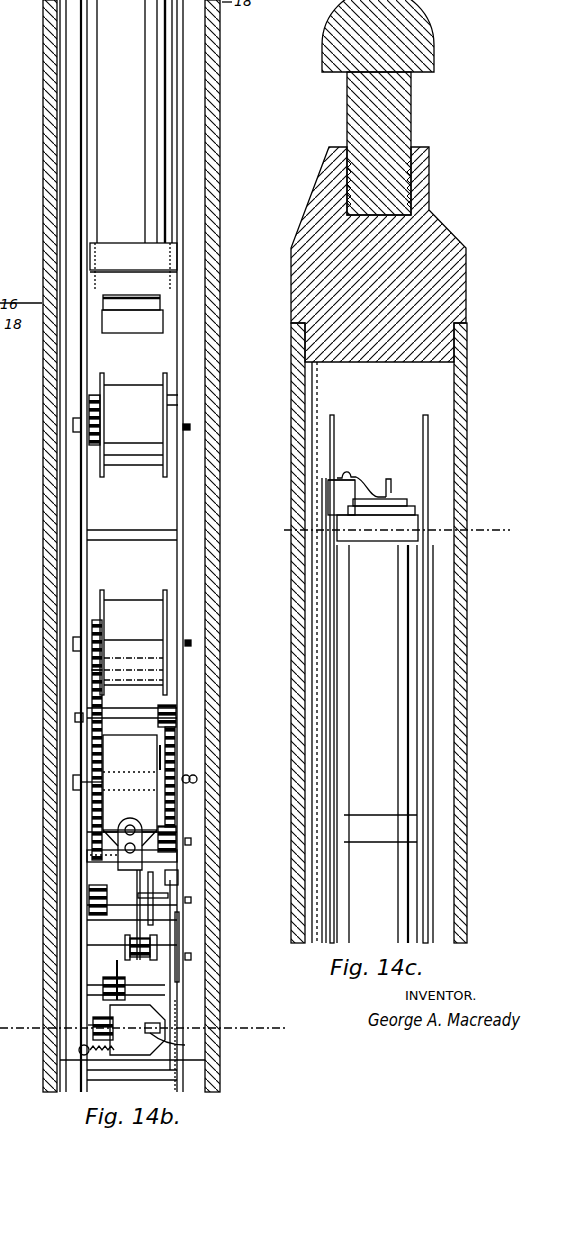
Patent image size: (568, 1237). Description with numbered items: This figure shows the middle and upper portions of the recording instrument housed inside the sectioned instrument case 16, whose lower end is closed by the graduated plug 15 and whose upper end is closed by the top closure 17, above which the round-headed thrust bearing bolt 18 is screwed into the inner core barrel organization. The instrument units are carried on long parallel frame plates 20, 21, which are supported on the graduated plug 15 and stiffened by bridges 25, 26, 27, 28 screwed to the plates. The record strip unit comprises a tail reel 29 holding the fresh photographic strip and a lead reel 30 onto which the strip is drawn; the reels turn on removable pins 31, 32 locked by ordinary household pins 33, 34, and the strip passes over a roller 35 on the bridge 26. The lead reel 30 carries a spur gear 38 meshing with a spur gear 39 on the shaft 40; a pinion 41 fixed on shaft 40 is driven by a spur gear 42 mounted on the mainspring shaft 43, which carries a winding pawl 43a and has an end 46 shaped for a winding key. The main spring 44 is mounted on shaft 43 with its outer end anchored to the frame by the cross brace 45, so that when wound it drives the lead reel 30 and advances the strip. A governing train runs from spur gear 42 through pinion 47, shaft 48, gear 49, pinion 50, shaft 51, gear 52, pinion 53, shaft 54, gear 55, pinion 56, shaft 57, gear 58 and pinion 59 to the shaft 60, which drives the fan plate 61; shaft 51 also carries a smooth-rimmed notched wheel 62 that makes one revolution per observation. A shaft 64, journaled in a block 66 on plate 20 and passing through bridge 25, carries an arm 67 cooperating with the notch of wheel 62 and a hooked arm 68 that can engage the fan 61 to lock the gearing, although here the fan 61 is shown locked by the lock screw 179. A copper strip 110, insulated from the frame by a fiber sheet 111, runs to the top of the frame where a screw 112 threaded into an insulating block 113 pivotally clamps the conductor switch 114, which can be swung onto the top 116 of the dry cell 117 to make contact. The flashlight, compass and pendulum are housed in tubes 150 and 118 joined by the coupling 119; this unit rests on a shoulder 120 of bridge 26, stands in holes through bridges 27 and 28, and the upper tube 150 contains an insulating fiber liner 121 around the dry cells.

In FIG. 14C, the graduated plug 15 is at (384, 530).
In FIG. 14B, the instrument case 16 is at (185, 303).
In FIG. 14C, the instrument case 16 is at (467, 375).
In FIG. 14B, the top closure 17 is at (142, 1028).
In FIG. 14C, the top closure 17 is at (455, 288).
In FIG. 14C, the thrust bearing bolt 18 is at (425, 48).
In FIG. 14B, the frame plate 20 is at (185, 1058).
In FIG. 14C, the frame plate 20 is at (430, 432).
In FIG. 14B, the frame plate 21 is at (90, 1072).
In FIG. 14C, the frame plate 21 is at (330, 424).
In FIG. 14B, the bridge 25 is at (158, 1075).
In FIG. 14B, the bridge 26 is at (170, 325).
In FIG. 14B, the bridge 27 is at (172, 252).
In FIG. 14C, the bridge 28 is at (420, 536).
In FIG. 14B, the tail reel 29 is at (155, 405).
In FIG. 14B, the lead reel 30 is at (158, 630).
In FIG. 14B, the removable pin 31 is at (73, 428).
In FIG. 14B, the removable pin 32 is at (73, 645).
In FIG. 14B, the household pin 33 is at (190, 430).
In FIG. 14B, the household pin 34 is at (191, 643).
In FIG. 14B, the roller 35 is at (160, 302).
In FIG. 14B, the spur gear 38 is at (95, 657).
In FIG. 14B, the spur gear 39 is at (95, 698).
In FIG. 14B, the shaft 40 is at (127, 718).
In FIG. 14B, the pinion 41 is at (176, 710).
In FIG. 14B, the spur gear 42 is at (175, 740).
In FIG. 14B, the mainspring shaft 43 is at (73, 782).
In FIG. 14B, the pawl 43a is at (163, 760).
In FIG. 14B, the main spring 44 is at (127, 748).
In FIG. 14B, the cross brace 45 is at (170, 862).
In FIG. 14B, the shaft end 46 is at (197, 779).
In FIG. 14B, the pinion 47 is at (176, 830).
In FIG. 14B, the shaft 48 is at (191, 841).
In FIG. 14B, the gear 49 is at (82, 823).
In FIG. 14B, the pinion 50 is at (95, 893).
In FIG. 14B, the shaft 51 is at (191, 900).
In FIG. 14B, the gear 52 is at (140, 935).
In FIG. 14B, the pinion 53 is at (157, 942).
In FIG. 14B, the shaft 54 is at (191, 956).
In FIG. 14B, the gear 55 is at (110, 932).
In FIG. 14B, the pinion 56 is at (116, 975).
In FIG. 14B, the shaft 57 is at (100, 985).
In FIG. 14B, the gear 58 is at (100, 1015).
In FIG. 14B, the pinion 59 is at (95, 1024).
In FIG. 14B, the shaft 60 is at (185, 1025).
In FIG. 14B, the fan plate 61 is at (132, 1043).
In FIG. 14B, the notched disc 62 is at (153, 912).
In FIG. 14B, the shaft 64 is at (172, 972).
In FIG. 14B, the block 66 is at (178, 876).
In FIG. 14B, the arm 67 is at (158, 893).
In FIG. 14B, the hooked arm 68 is at (185, 1045).
In FIG. 14B, the conductor strip 110 is at (80, 80).
In FIG. 14C, the conductor strip 110 is at (340, 478).
In FIG. 14B, the insulation fiber sheet 111 is at (82, 66).
In FIG. 14C, the insulation fiber sheet 111 is at (322, 490).
In FIG. 14C, the screw 112 is at (340, 470).
In FIG. 14C, the insulation block 113 is at (343, 500).
In FIG. 14C, the conductor switch 114 is at (392, 476).
In FIG. 14C, the cell top 116 is at (392, 488).
In FIG. 14C, the electric dry cell 117 is at (395, 500).
In FIG. 14B, the tube 118 is at (145, 88).
In FIG. 14C, the coupling 119 is at (395, 820).
In FIG. 14B, the shoulder 120 is at (160, 298).
In FIG. 14C, the liner 121 is at (400, 509).
In FIG. 14C, the upper tube 150 is at (388, 693).
In FIG. 14B, the lock screw 179 is at (78, 1050).